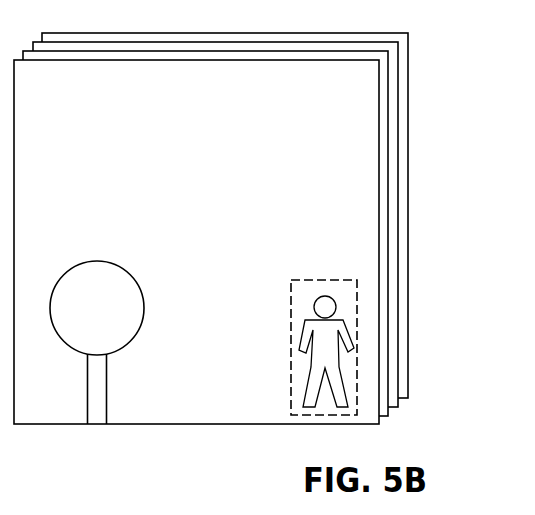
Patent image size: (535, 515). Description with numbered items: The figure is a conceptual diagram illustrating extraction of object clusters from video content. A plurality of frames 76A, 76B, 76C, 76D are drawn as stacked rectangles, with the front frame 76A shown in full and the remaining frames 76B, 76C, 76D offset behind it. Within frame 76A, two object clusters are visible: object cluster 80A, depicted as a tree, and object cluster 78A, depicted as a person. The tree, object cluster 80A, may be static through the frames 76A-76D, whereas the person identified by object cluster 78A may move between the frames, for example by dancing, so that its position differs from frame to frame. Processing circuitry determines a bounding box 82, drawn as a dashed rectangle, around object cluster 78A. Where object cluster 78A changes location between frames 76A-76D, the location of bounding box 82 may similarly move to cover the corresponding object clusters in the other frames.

The frame 76A is at (379, 149).
The frame 76B is at (388, 113).
The frame 76C is at (398, 74).
The frame 76D is at (408, 44).
The object cluster 78A is at (268, 294).
The object cluster 80A is at (118, 252).
The bounding box 82 is at (322, 280).